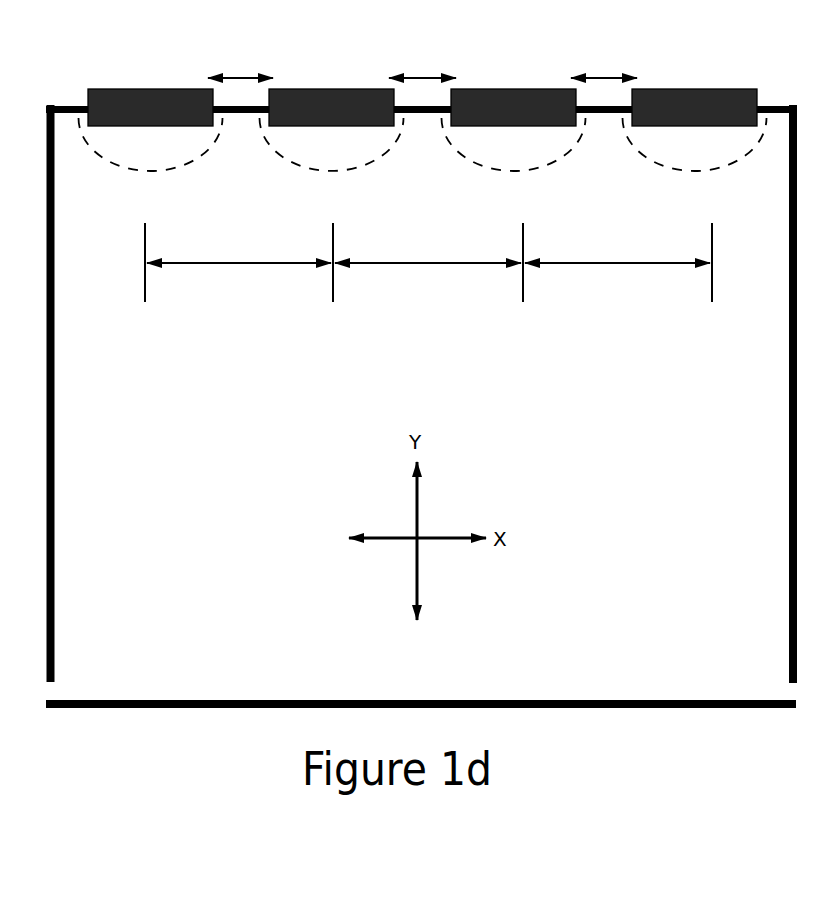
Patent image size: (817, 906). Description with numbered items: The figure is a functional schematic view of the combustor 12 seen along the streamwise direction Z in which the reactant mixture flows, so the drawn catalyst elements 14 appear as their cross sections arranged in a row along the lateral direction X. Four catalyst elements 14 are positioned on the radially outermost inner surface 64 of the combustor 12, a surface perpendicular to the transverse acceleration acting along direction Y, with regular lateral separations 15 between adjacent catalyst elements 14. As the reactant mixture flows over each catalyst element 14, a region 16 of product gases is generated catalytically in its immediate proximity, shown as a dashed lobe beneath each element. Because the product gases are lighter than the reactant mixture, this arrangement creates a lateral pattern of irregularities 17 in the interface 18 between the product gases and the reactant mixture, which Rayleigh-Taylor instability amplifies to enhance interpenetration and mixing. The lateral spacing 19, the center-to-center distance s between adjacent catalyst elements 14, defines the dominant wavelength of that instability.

The combustor 12 is at (64, 388).
The catalyst element 14 is at (155, 98).
The lateral separation 15 is at (422, 63).
The region of product gases 16 is at (702, 773).
The irregularity 17 is at (250, 137).
The interface 18 is at (115, 168).
The lateral spacing 19 is at (428, 262).
The radially outermost inner surface 64 is at (778, 116).